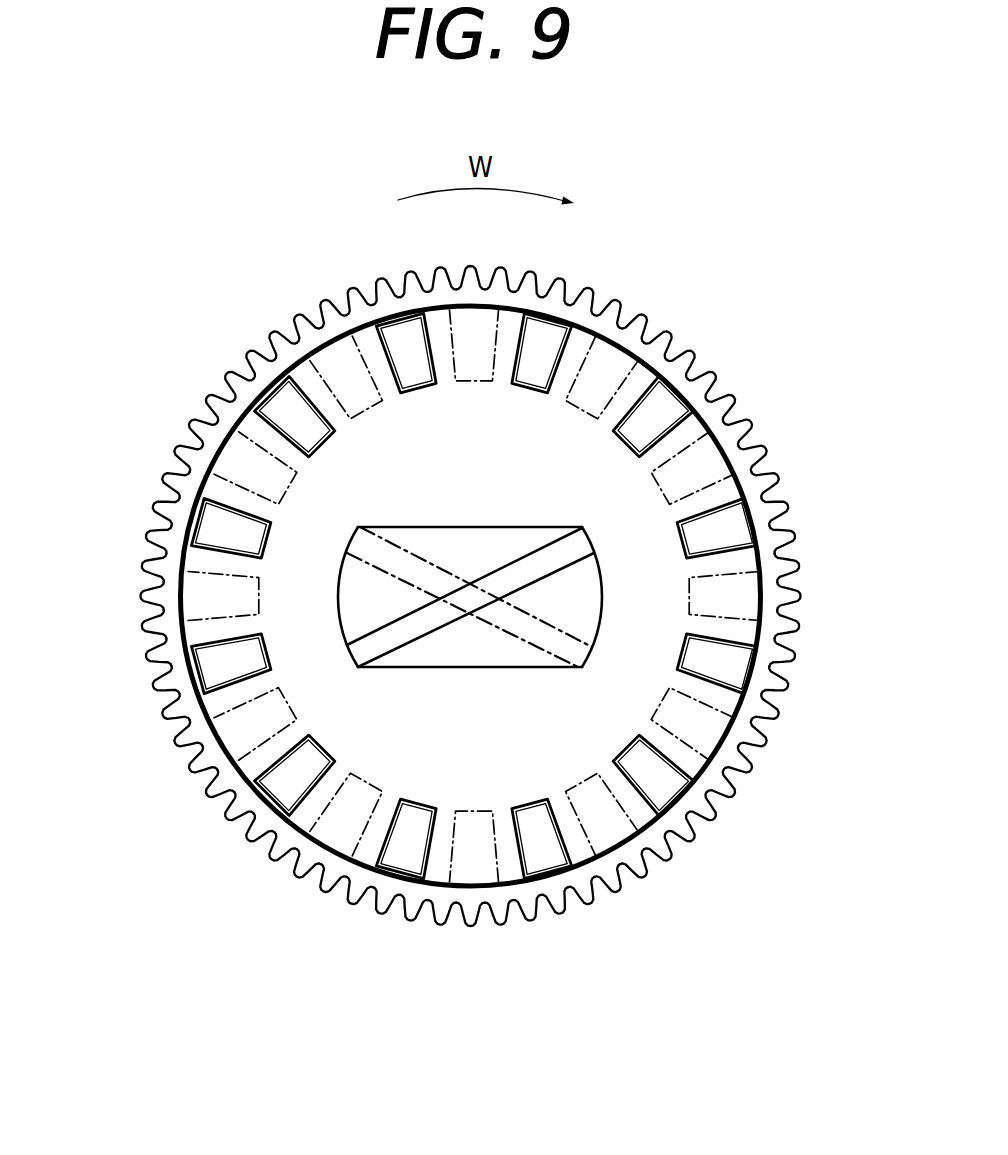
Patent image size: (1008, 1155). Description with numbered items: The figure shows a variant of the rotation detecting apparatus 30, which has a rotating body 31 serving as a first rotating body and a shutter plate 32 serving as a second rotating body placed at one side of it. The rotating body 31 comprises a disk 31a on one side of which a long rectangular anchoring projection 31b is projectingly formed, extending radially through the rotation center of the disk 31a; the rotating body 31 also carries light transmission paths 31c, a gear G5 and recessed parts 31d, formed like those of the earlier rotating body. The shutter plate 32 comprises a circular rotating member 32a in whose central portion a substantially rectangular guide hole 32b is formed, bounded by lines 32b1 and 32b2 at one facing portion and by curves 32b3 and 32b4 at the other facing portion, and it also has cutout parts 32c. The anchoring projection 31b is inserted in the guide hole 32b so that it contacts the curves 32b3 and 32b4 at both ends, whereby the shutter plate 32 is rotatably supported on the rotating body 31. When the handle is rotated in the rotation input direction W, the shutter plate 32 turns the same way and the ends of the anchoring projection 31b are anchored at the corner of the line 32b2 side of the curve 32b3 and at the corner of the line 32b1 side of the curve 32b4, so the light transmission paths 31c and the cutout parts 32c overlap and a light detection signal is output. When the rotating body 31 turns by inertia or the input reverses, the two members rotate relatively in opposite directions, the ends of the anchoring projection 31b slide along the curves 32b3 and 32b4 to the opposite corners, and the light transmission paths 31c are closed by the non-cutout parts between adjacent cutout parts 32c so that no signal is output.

The rotation detecting apparatus 30 is at (751, 324).
The rotating body 31 is at (809, 564).
The disk 31a is at (757, 762).
The anchoring projection 31b is at (428, 628).
The light transmission paths 31c is at (390, 866).
The recessed parts 31d is at (668, 404).
The shutter plate 32 is at (417, 422).
The circular rotating member 32a is at (293, 567).
The guide hole 32b is at (502, 525).
The line 32b1 is at (398, 529).
The line 32b2 is at (385, 668).
The curve 32b3 is at (342, 620).
The curve 32b4 is at (603, 572).
The cutout parts 32c is at (408, 801).
The gear G5 is at (783, 481).